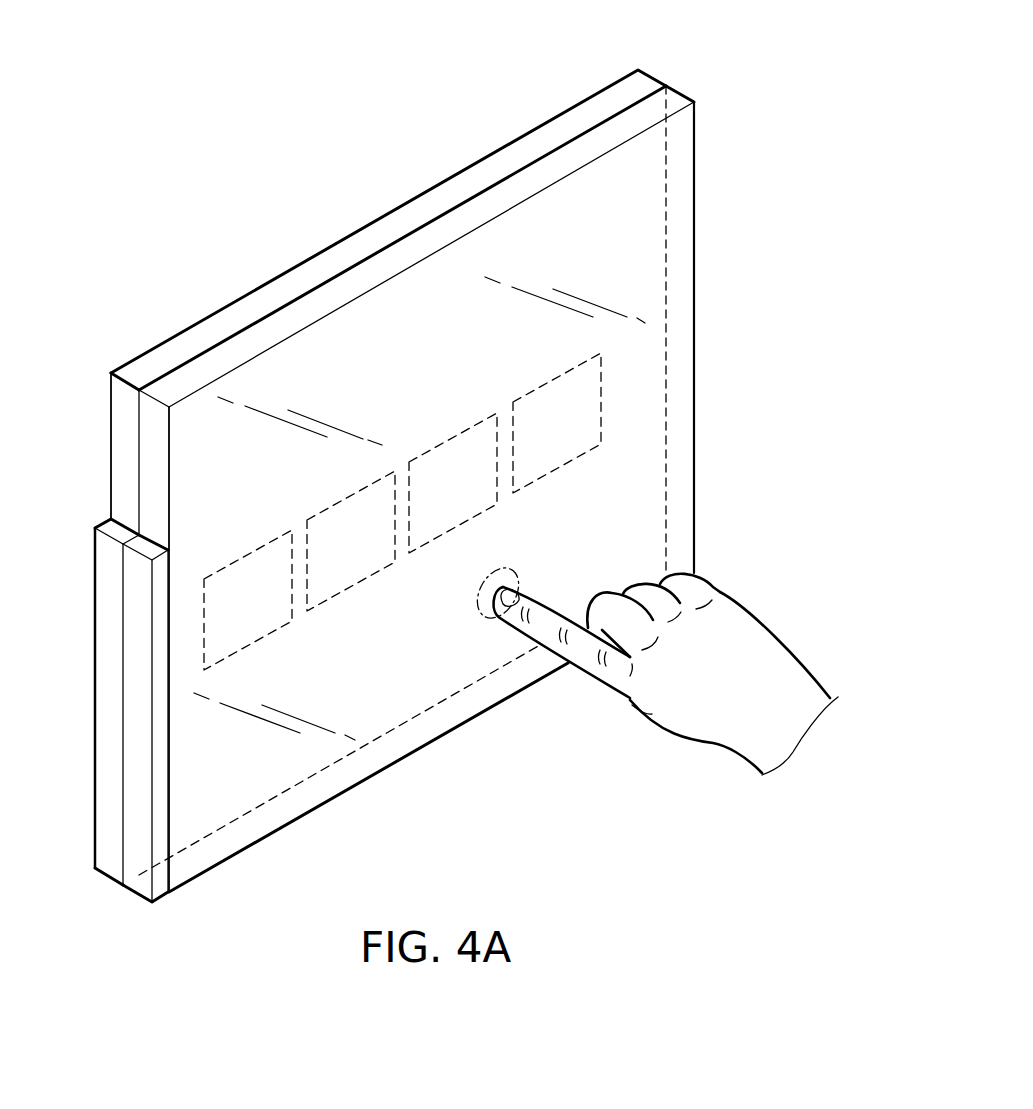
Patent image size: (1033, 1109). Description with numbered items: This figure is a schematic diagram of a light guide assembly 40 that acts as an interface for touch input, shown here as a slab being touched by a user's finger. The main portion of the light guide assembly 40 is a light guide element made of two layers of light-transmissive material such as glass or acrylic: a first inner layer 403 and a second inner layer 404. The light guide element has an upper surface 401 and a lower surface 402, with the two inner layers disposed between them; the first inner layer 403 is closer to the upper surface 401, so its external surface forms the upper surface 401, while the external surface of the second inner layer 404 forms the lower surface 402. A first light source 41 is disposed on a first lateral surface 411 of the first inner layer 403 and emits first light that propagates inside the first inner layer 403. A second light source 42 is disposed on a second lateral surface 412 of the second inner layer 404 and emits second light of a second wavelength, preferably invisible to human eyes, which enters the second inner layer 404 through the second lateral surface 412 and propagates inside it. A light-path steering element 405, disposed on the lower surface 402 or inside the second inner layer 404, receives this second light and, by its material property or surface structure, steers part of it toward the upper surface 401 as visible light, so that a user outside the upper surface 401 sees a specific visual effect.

The light guide assembly 40 is at (327, 57).
The upper surface 401 is at (680, 180).
The lower surface 402 is at (593, 92).
The first inner layer 403 is at (682, 93).
The second inner layer 404 is at (655, 74).
The light-path steering element 405 is at (454, 437).
The first lateral surface 411 is at (152, 480).
The second lateral surface 412 is at (123, 428).
The first light source 41 is at (142, 880).
The second light source 42 is at (110, 863).